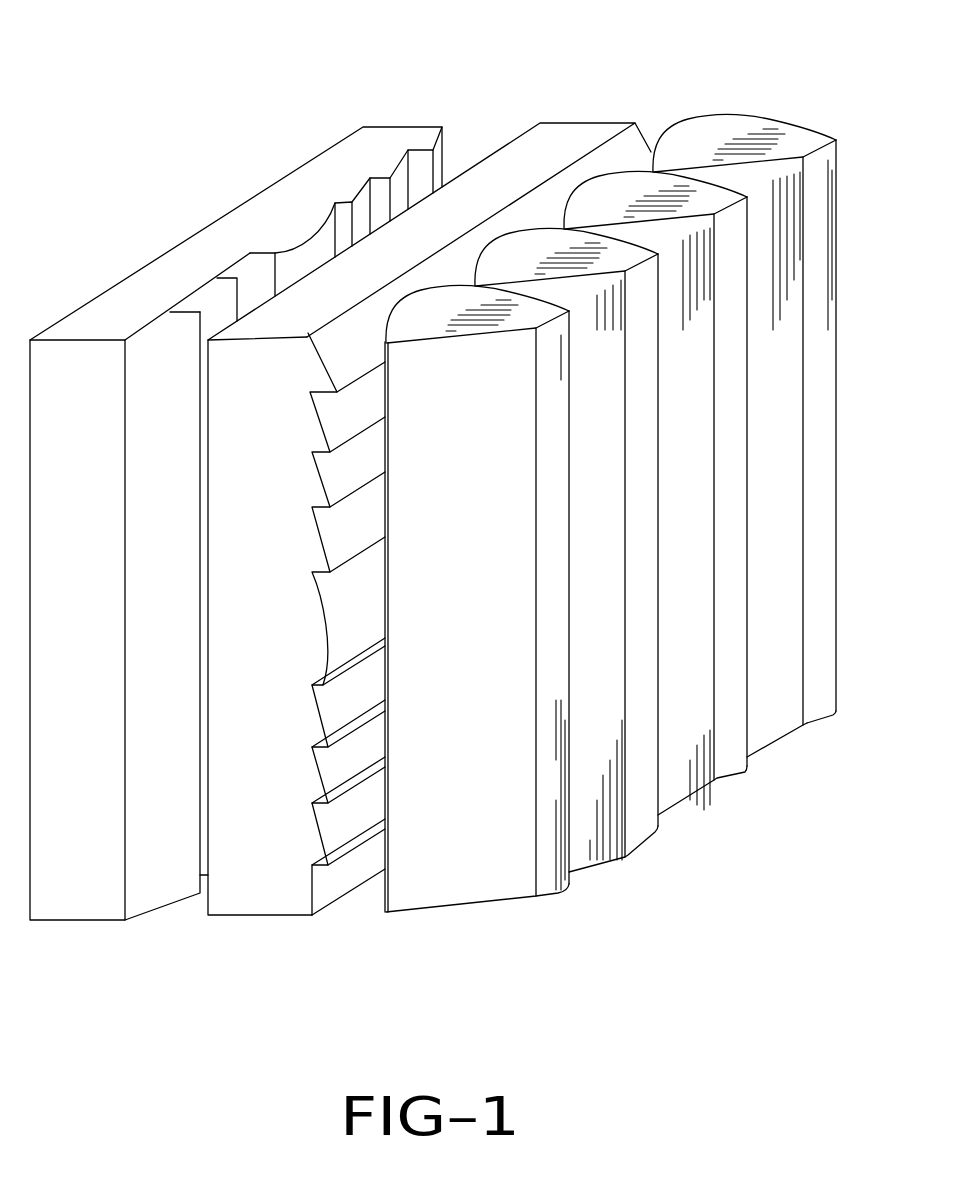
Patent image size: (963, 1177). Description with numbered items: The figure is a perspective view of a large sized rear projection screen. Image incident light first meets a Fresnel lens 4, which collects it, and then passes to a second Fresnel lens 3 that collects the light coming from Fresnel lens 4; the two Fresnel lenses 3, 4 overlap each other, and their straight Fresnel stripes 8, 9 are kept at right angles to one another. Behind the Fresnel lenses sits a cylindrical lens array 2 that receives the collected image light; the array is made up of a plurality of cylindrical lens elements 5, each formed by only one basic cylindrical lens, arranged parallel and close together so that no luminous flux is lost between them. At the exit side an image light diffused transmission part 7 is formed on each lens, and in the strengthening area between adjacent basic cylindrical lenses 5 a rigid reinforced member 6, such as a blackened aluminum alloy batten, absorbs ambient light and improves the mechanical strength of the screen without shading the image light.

The cylindrical lens array 2 is at (488, 918).
The Fresnel lens 3 is at (429, 556).
The Fresnel lens 4 is at (236, 558).
The cylindrical lens element 5 is at (757, 417).
The rigid reinforced member 6 is at (762, 725).
The image light diffused transmission part 7 is at (820, 700).
The straight Fresnel stripes 8 is at (345, 877).
The straight Fresnel stripes 9 is at (248, 270).